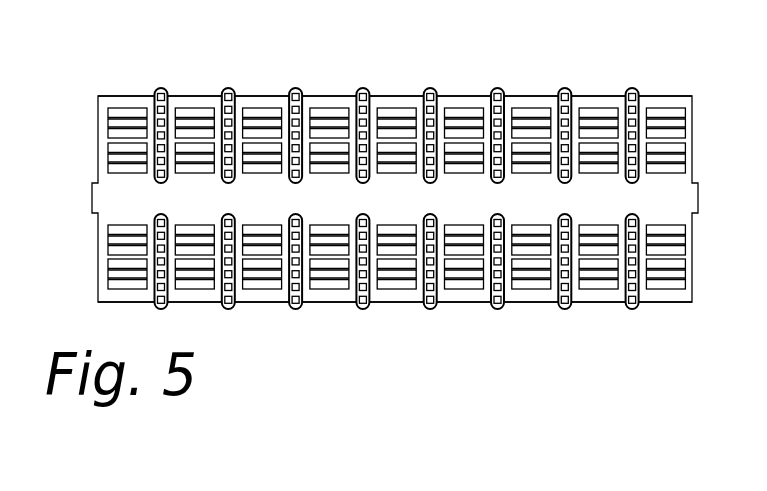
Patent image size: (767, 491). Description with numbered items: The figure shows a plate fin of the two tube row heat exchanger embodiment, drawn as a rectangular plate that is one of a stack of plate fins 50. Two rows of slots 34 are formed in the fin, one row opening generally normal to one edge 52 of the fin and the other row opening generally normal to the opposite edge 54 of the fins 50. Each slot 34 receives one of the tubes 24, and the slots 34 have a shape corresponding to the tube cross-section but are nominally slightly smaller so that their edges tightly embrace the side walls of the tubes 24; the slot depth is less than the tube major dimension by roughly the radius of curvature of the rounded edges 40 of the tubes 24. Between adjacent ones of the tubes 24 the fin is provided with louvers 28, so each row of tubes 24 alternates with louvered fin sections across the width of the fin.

The tubes 24 is at (228, 88).
The louvers 28 is at (466, 110).
The slots 34 is at (565, 97).
The rounded edges 40 is at (430, 88).
The plate fins 50 is at (685, 197).
The one edge of the fin 52 is at (662, 303).
The opposite edge of the fin 54 is at (670, 96).